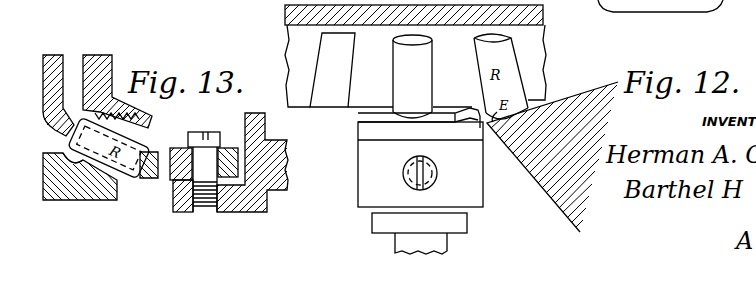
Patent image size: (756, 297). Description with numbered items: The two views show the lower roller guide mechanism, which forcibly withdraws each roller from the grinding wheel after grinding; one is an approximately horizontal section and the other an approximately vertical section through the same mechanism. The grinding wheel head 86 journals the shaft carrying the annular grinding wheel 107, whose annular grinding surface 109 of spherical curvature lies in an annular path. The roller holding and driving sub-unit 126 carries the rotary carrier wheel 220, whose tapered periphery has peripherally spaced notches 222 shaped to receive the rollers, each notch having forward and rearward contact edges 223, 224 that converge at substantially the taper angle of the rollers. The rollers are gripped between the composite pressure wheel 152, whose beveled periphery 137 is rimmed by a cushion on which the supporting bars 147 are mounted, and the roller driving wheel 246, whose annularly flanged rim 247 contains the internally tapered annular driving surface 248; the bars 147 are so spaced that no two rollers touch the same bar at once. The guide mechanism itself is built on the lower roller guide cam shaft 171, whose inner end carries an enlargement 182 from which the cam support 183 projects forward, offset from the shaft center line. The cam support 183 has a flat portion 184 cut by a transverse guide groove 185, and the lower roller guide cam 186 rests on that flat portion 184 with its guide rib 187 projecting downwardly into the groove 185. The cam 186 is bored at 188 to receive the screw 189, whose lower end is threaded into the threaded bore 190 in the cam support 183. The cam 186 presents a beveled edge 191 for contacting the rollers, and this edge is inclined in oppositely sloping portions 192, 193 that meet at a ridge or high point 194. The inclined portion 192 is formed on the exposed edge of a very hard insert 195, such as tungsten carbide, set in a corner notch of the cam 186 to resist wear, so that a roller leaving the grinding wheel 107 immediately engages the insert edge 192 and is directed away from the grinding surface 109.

In FIG. 12, the grinding wheel head 86 is at (357, 183).
In FIG. 12, the annular grinding wheel 107 is at (563, 198).
In FIG. 12, the annular grinding surface 109 is at (608, 92).
In FIG. 12, the roller holding and driving sub-unit 126 is at (273, 0).
In FIG. 13, the beveled periphery 137 is at (159, 150).
In FIG. 13, the supporting bars 147 is at (146, 142).
In FIG. 13, the composite pressure wheel 152 is at (114, 58).
In FIG. 13, the lower roller guide cam shaft 171 is at (280, 145).
In FIG. 12, the lower roller guide cam shaft 171 is at (450, 243).
In FIG. 13, the enlargement 182 is at (263, 113).
In FIG. 12, the enlargement 182 is at (467, 225).
In FIG. 13, the cam support 183 is at (250, 213).
In FIG. 12, the cam support 183 is at (462, 208).
In FIG. 13, the flat portion 184 is at (173, 182).
In FIG. 13, the transverse guide groove 185 is at (190, 213).
In FIG. 13, the lower roller guide cam 186 is at (178, 139).
In FIG. 12, the lower roller guide cam 186 is at (468, 183).
In FIG. 13, the guide rib 187 is at (219, 148).
In FIG. 13, the bore 188 is at (148, 176).
In FIG. 13, the screw 189 is at (212, 131).
In FIG. 12, the screw 189 is at (411, 177).
In FIG. 13, the threaded bore 190 is at (228, 214).
In FIG. 13, the beveled edge 191 is at (144, 180).
In FIG. 12, the beveled edge 191 is at (358, 118).
In FIG. 12, the inclined edge portion 192 is at (487, 122).
In FIG. 12, the inclined edge portion 193 is at (385, 118).
In FIG. 12, the ridge 194 is at (459, 118).
In FIG. 12, the insert 195 is at (465, 126).
In FIG. 13, the carrier wheel 220 is at (52, 64).
In FIG. 12, the carrier wheel 220 is at (530, 14).
In FIG. 13, the notches 222 is at (73, 112).
In FIG. 12, the notches 222 is at (433, 37).
In FIG. 12, the forward contact edge 223 is at (434, 60).
In FIG. 12, the rearward contact edge 224 is at (393, 80).
In FIG. 13, the roller driving wheel 246 is at (50, 203).
In FIG. 13, the annularly flanged rim 247 is at (80, 201).
In FIG. 13, the annular driving surface 248 is at (72, 152).